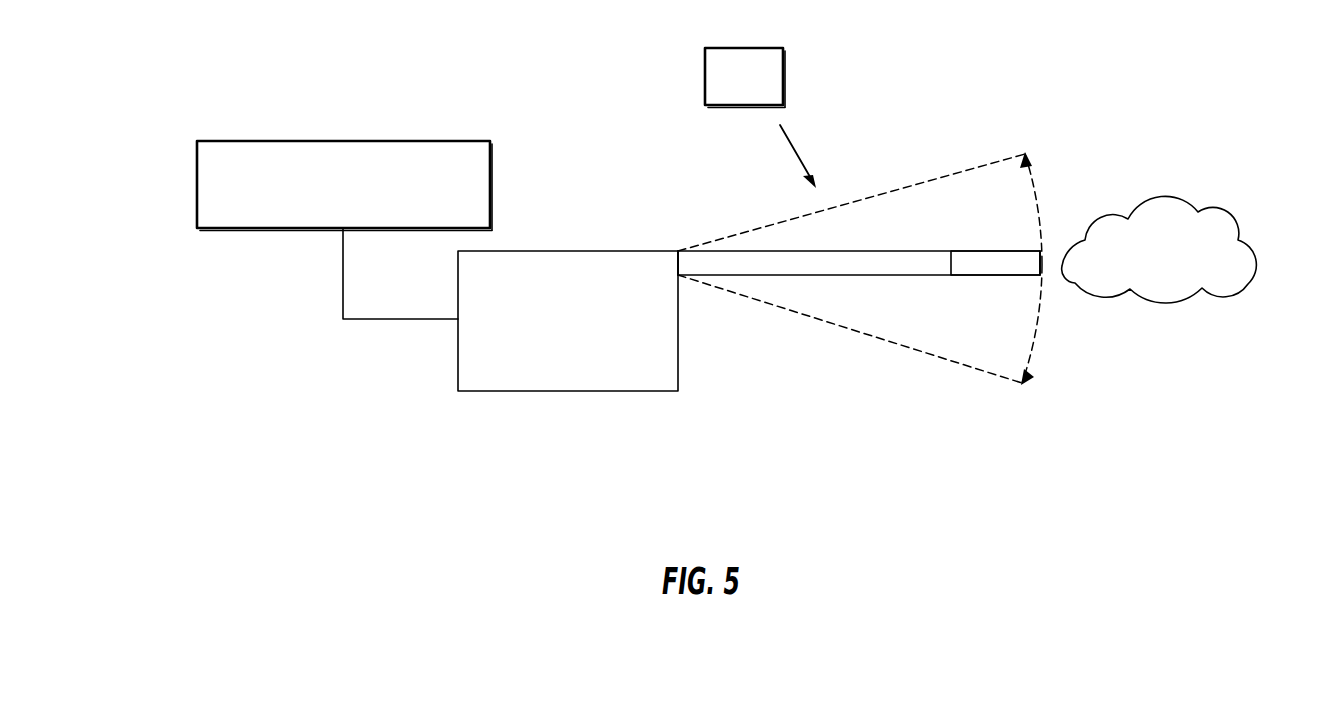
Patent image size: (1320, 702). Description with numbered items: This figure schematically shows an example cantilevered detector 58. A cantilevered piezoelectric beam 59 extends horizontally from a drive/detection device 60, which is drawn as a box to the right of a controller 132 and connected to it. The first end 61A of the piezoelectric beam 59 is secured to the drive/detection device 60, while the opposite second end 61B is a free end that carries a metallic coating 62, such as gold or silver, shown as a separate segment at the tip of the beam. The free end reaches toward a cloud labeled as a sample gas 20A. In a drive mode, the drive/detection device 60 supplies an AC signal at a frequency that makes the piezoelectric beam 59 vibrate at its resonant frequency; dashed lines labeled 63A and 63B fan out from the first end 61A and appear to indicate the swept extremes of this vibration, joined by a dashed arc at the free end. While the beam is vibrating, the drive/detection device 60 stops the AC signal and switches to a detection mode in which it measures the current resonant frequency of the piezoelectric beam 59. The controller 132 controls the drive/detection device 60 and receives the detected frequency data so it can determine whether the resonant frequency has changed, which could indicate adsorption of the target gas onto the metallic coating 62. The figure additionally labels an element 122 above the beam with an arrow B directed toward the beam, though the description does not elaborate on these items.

The cantilevered detector 58 is at (1163, 97).
The controller 132 is at (197, 190).
The drive/detection device 60 is at (556, 376).
The piezoelectric beam 59 is at (865, 277).
The metallic coating 62 is at (992, 258).
The first end 61A is at (678, 265).
The second end 61B is at (1043, 268).
The first swept position 63A is at (916, 184).
The second swept position 63B is at (938, 358).
The beam source 122 is at (727, 90).
The beam B is at (790, 145).
The sample gas 20A is at (1213, 212).